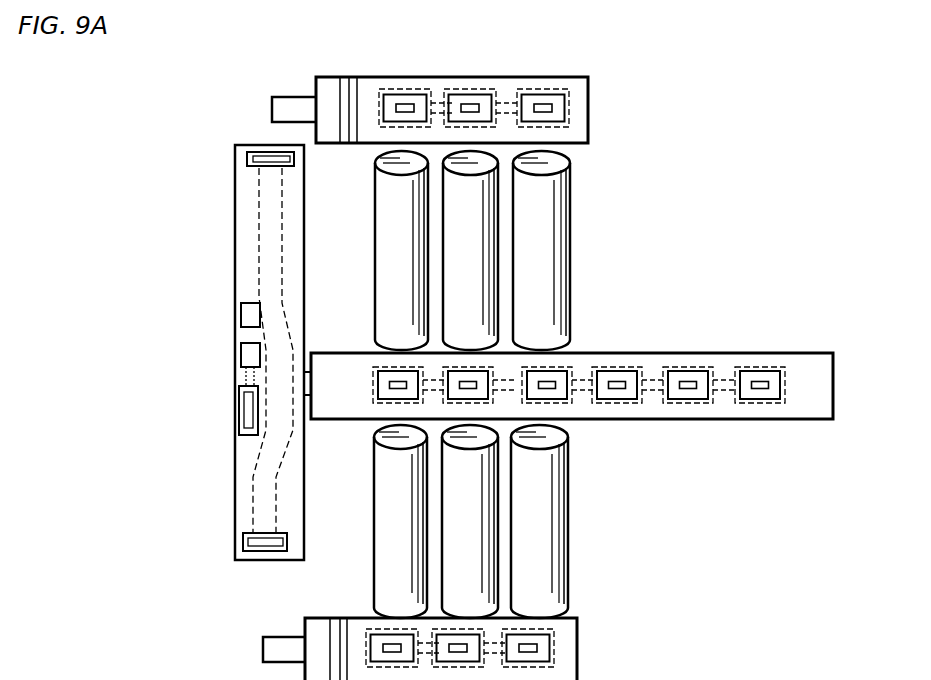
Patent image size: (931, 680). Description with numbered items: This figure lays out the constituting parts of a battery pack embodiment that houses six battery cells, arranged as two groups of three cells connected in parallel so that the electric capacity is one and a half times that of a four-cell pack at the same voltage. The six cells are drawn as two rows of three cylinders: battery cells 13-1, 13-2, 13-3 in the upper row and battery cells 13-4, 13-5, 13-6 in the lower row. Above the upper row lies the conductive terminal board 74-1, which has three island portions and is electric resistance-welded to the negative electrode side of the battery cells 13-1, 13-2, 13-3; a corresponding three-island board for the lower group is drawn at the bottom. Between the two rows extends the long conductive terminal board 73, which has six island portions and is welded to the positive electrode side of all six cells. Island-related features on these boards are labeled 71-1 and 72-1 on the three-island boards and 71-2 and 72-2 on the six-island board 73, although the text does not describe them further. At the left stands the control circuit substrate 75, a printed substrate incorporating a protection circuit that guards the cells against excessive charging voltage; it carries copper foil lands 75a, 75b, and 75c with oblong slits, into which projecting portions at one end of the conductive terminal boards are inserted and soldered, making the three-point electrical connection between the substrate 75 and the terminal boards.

The conductive terminal board 74-1 is at (378, 33).
The connection module on first board 71-1 is at (460, 90).
The first wiring board 72-1 is at (562, 78).
The conductive terminal board 73 is at (632, 352).
The connection module on central board 71-2 is at (690, 368).
The central wiring board modules 72-2 is at (783, 353).
The battery cell 13-1 is at (556, 205).
The battery cell 13-2 is at (487, 252).
The battery cell 13-3 is at (385, 207).
The battery cell 13-4 is at (538, 478).
The battery cell 13-5 is at (474, 517).
The battery cell 13-6 is at (385, 497).
The control circuit substrate 75 is at (222, 440).
The copper foil land 75a is at (247, 158).
The copper foil land 75b is at (245, 542).
The copper foil land 75c is at (240, 398).